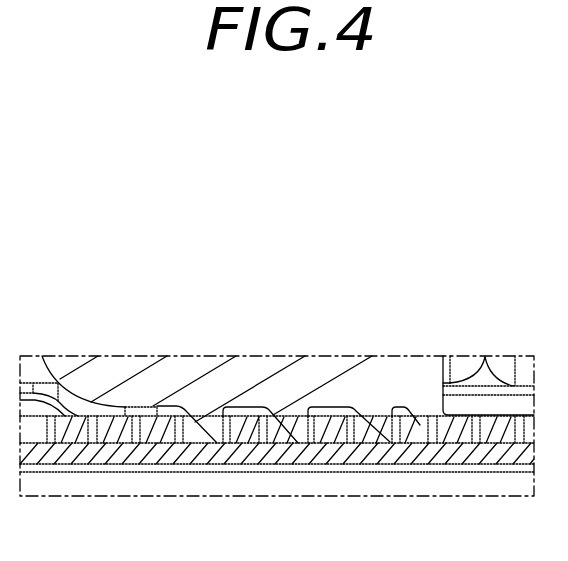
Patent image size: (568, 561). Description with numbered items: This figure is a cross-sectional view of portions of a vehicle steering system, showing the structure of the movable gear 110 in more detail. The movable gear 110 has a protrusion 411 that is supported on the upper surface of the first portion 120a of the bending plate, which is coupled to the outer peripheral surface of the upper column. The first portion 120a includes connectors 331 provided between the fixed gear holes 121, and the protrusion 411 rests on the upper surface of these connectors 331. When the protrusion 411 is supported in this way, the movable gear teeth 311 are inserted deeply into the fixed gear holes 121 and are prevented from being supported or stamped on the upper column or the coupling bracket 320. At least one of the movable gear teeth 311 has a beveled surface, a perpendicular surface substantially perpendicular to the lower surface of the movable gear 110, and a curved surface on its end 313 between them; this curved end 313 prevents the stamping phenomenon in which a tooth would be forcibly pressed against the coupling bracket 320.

The movable gear 110 is at (167, 387).
The movable gear teeth 311 is at (300, 430).
The protrusion 411 is at (377, 438).
The coupling bracket 320 is at (144, 445).
The fixed gear holes 121 is at (199, 430).
The end 313 is at (214, 441).
The first portion 120a is at (327, 431).
The connectors 331 is at (417, 427).